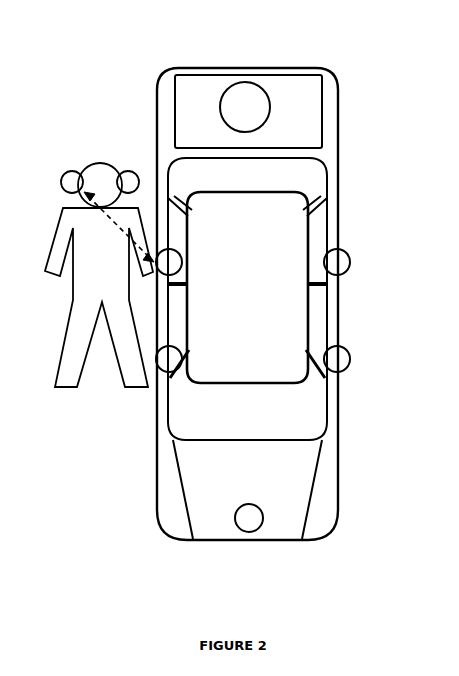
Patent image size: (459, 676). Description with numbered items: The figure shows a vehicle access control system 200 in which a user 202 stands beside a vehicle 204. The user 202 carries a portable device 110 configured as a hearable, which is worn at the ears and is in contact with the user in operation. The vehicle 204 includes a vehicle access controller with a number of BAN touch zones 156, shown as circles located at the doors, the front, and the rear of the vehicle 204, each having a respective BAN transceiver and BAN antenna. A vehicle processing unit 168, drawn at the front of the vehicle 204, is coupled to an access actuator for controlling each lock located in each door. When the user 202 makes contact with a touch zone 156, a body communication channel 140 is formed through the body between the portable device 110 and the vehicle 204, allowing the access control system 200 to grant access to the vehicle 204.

The portable device 110 is at (64, 174).
The body communication channel 140 is at (113, 228).
The BAN touch zones 156 is at (178, 253).
The vehicle processing unit 168 is at (237, 83).
The vehicle access control system 200 is at (239, 313).
The user 202 is at (88, 284).
The vehicle 204 is at (157, 488).